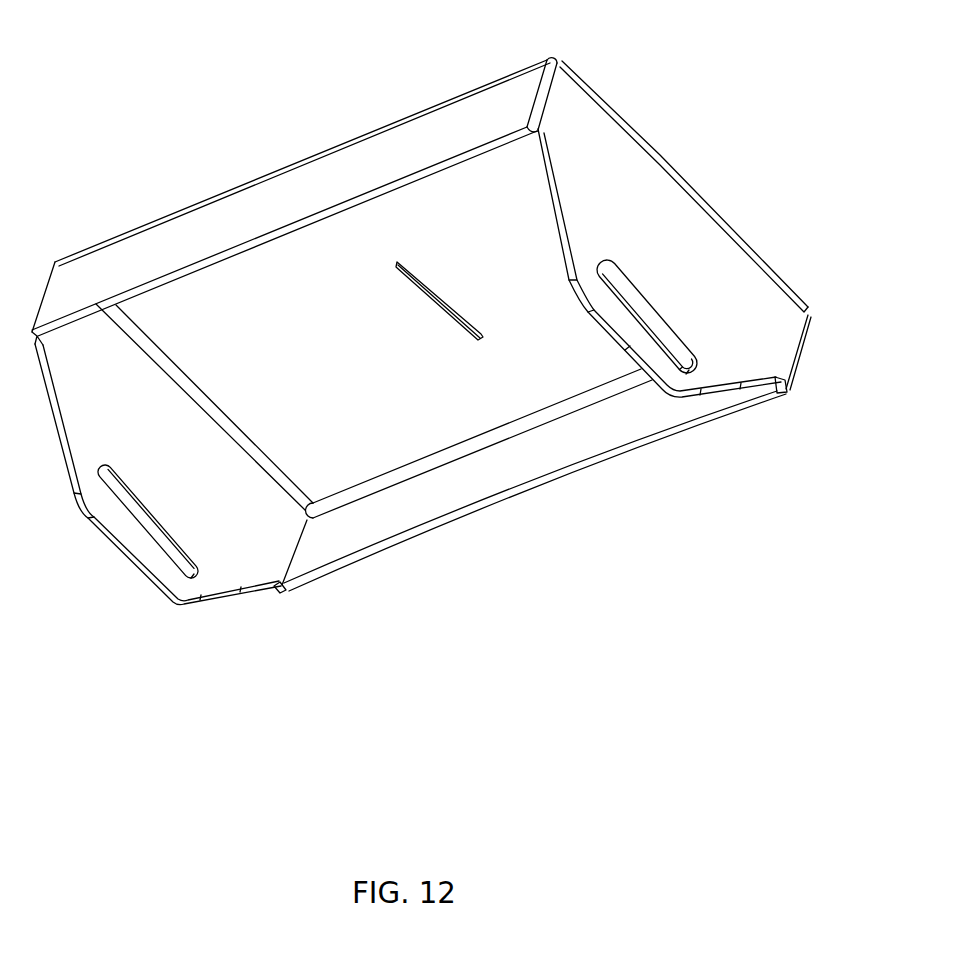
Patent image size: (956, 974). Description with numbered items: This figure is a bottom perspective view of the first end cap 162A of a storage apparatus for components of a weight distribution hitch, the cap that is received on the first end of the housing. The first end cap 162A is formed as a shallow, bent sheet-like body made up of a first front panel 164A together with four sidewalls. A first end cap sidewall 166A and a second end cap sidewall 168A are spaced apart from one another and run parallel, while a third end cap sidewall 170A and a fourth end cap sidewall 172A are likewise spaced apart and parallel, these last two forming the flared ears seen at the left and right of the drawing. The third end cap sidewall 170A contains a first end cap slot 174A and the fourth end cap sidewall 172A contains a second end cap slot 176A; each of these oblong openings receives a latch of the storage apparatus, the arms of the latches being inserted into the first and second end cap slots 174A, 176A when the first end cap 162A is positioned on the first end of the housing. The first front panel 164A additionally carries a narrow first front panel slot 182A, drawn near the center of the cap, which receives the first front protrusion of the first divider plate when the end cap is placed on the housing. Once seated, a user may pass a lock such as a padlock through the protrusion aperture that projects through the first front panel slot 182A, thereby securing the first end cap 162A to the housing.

The first end cap 162A is at (220, 218).
The first front panel 164A is at (588, 367).
The first end cap sidewall 166A is at (450, 143).
The second end cap sidewall 168A is at (480, 477).
The third end cap sidewall 170A is at (225, 535).
The fourth end cap sidewall 172A is at (580, 108).
The first end cap slot 174A is at (170, 532).
The second end cap slot 176A is at (663, 333).
The first front panel slot 182A is at (408, 267).